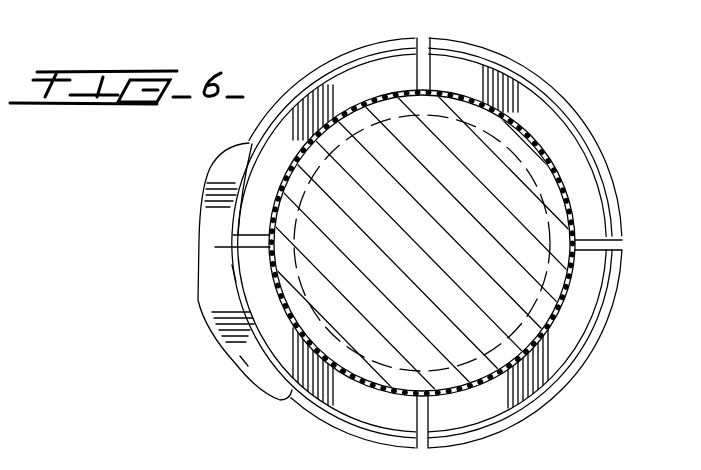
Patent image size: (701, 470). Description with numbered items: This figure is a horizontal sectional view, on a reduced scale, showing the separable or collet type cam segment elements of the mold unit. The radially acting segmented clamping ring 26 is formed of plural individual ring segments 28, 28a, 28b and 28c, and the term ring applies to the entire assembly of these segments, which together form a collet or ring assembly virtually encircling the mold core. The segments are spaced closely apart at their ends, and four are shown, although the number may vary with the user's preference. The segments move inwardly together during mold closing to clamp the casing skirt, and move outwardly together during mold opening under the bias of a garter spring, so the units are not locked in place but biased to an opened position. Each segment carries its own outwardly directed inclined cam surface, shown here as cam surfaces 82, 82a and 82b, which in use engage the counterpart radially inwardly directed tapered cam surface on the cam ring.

The segmented clamping ring 26 is at (592, 100).
The ring segment 28 is at (343, 93).
The ring segment 28a is at (505, 74).
The ring segment 28b is at (583, 292).
The ring segment 28c is at (332, 388).
The inclined cam surface 82 is at (389, 48).
The inclined cam surface 82a is at (586, 138).
The inclined cam surface 82b is at (582, 355).